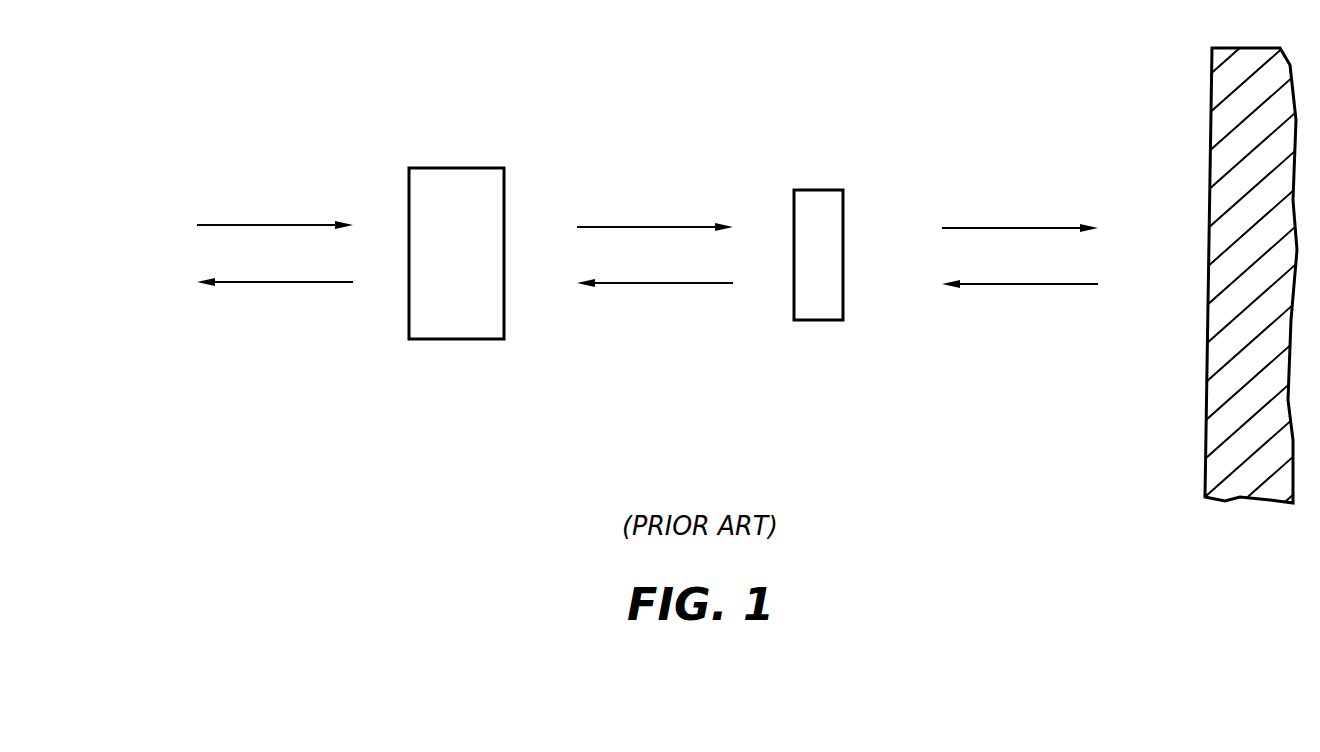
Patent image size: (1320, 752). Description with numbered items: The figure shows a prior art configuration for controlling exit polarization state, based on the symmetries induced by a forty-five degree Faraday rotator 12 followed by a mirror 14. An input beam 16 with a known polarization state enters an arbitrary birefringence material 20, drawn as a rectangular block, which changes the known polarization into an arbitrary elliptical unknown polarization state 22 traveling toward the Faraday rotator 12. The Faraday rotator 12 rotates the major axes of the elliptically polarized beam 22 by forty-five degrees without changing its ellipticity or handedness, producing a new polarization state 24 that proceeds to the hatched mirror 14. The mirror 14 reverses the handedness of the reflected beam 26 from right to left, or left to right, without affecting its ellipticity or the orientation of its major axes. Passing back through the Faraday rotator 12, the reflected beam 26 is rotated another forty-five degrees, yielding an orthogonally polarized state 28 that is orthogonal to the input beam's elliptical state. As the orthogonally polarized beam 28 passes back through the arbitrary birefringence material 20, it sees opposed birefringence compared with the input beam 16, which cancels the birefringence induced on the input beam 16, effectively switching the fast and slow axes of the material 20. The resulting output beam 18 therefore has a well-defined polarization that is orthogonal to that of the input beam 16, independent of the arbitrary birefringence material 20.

The 45 degree Faraday rotator 12 is at (820, 320).
The mirror 14 is at (1210, 84).
The input beam 16 is at (251, 225).
The output beam 18 is at (252, 282).
The arbitrary birefringence material 20 is at (470, 339).
The arbitrary elliptical polarization state 22 is at (638, 227).
The new polarization state 24 is at (987, 228).
The reflected beam 26 is at (1025, 284).
The orthogonally polarized state 28 is at (650, 283).